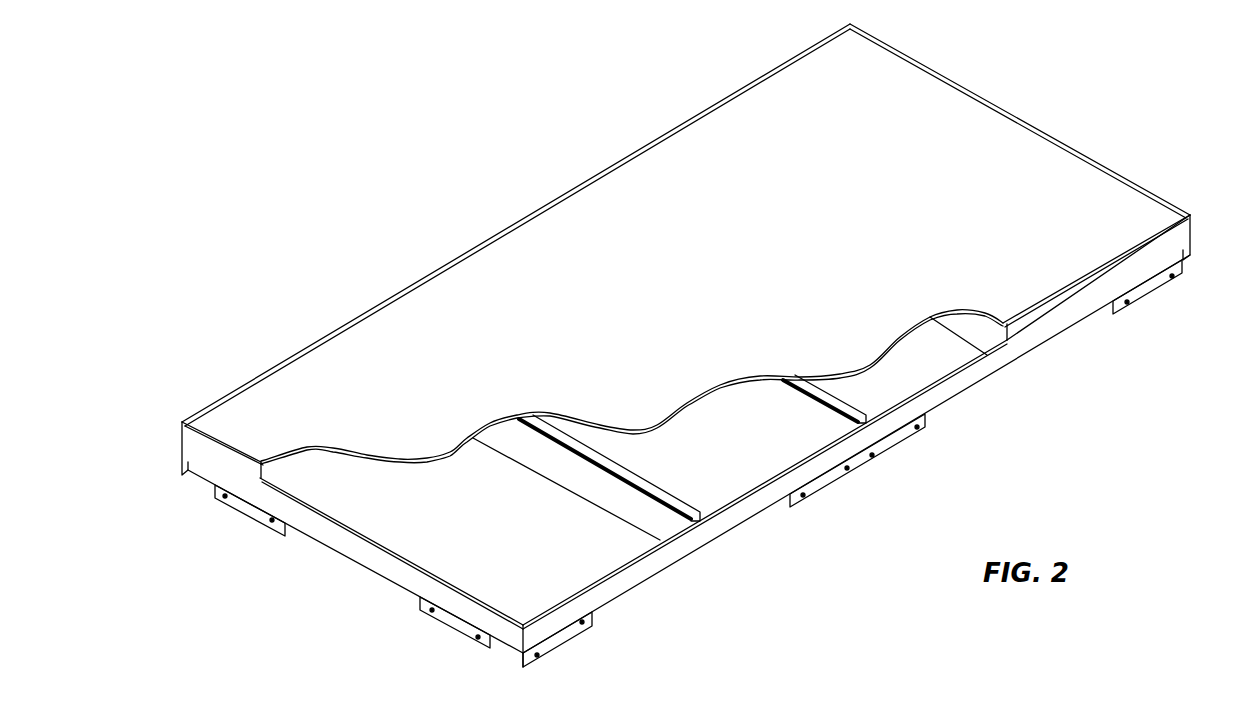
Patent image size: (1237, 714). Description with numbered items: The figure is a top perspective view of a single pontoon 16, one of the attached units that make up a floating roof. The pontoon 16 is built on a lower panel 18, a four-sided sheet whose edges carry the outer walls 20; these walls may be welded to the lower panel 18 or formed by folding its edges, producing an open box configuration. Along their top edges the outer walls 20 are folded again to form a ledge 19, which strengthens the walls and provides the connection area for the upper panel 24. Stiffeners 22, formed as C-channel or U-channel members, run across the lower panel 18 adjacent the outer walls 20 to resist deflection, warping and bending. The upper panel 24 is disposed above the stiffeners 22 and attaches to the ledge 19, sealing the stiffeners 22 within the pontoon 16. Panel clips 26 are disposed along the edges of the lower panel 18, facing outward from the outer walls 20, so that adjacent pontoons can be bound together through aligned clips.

The pontoon 16 is at (335, 118).
The lower panel 18 is at (553, 578).
The ledge 19 is at (1143, 190).
The outer wall 20 is at (390, 566).
The stiffener 22 is at (803, 414).
The upper panel 24 is at (627, 242).
The panel clip 26 is at (453, 624).